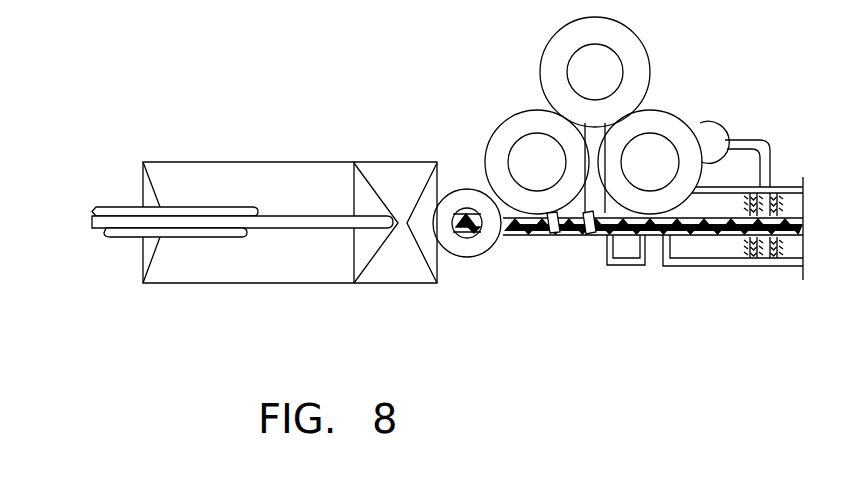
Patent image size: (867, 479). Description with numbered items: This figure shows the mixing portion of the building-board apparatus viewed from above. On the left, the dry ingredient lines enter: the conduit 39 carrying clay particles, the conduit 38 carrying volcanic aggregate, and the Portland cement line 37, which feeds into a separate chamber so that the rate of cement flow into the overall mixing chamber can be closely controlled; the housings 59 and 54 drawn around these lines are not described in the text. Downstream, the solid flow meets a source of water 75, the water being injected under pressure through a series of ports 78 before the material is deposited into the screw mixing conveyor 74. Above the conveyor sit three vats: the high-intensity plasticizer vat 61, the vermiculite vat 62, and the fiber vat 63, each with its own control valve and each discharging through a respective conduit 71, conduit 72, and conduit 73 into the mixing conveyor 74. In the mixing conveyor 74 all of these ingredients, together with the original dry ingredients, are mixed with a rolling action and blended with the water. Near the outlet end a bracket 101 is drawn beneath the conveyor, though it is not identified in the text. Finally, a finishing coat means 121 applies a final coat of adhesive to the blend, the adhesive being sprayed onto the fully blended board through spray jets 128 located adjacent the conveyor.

The Portland cement line 37 is at (293, 222).
The conduit 38 is at (247, 205).
The conduit 39 is at (210, 238).
The guide housing 54 is at (385, 173).
The housing 59 is at (192, 176).
The high-intensity plasticizer vat 61 is at (552, 169).
The vermiculite vat 62 is at (610, 81).
The fiber vat 63 is at (665, 169).
The conduit 71 is at (548, 234).
The conduit 72 is at (580, 237).
The conduit 73 is at (653, 236).
The mixing conveyor 74 is at (672, 238).
The source of water 75 is at (453, 255).
The ports 78 is at (480, 232).
The bracket 101 is at (628, 250).
The finishing coat means 121 is at (724, 111).
The spray jets 128 is at (767, 250).